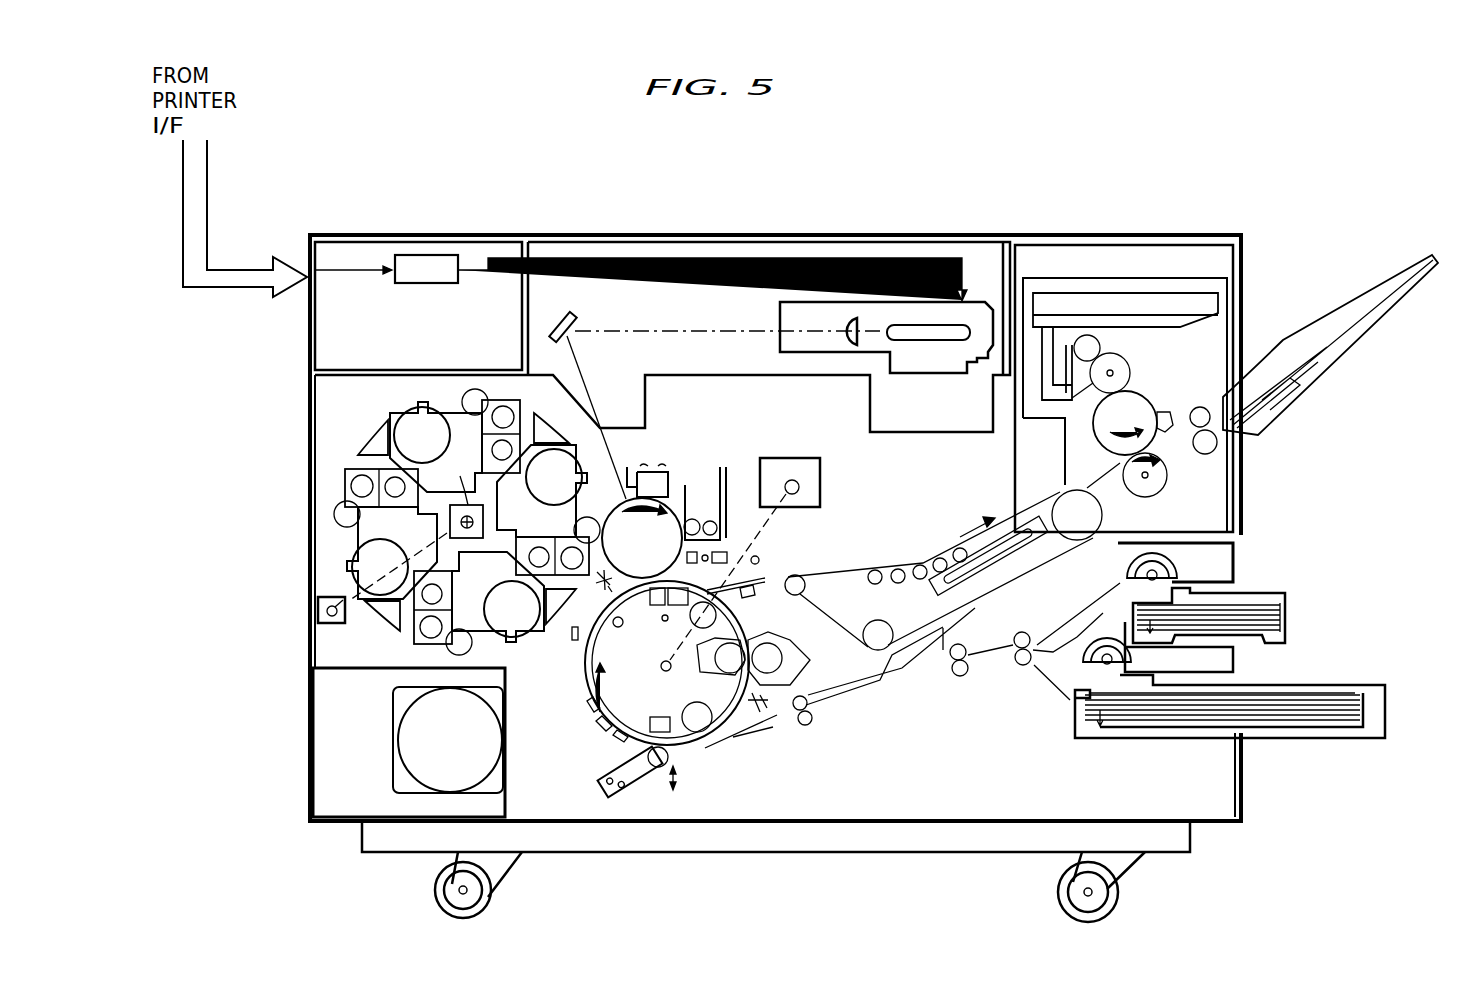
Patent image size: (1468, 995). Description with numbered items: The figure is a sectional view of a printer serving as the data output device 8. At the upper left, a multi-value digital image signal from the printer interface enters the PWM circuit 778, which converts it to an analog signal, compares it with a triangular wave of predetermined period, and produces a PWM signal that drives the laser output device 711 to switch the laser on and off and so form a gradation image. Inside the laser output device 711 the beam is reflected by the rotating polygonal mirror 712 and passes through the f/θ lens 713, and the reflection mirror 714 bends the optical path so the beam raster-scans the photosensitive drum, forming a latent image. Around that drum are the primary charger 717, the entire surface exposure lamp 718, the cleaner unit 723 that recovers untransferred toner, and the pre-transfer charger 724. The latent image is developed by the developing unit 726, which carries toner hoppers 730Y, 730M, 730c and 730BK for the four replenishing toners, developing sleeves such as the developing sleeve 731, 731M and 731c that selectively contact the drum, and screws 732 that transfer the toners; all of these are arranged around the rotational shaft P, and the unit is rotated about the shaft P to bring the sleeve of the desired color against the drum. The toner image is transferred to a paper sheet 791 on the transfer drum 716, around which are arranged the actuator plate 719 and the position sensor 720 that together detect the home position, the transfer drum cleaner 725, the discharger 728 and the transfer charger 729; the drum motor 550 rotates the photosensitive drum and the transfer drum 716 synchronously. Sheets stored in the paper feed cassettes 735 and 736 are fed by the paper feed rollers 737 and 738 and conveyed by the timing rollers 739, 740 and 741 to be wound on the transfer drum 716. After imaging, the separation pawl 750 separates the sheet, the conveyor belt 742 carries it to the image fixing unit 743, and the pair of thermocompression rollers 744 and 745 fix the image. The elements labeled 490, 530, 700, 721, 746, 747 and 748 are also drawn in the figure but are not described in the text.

The data output device 8 is at (1283, 286).
The paper guide 490 is at (740, 740).
The sensor 530 is at (322, 623).
The drum motor 550 is at (797, 458).
The printer control 700 is at (325, 346).
The laser output device 711 is at (877, 302).
The polygonal mirror 712 is at (930, 342).
The f/θ lens 713 is at (845, 323).
The reflection mirror 714 is at (573, 318).
The transfer drum 716 is at (667, 663).
The primary charger 717 is at (672, 480).
The entire surface exposure lamp 718 is at (633, 470).
The actuator plate 719 is at (584, 707).
The position sensor 720 is at (610, 732).
The cleaning blade 721 is at (643, 775).
The cleaner unit 723 is at (694, 522).
The pre-transfer charger 724 is at (597, 586).
The transfer drum cleaner 725 is at (733, 655).
The developing unit 726 is at (362, 442).
The discharger 728 is at (655, 717).
The transfer charger 729 is at (657, 608).
The toner hopper 730BK is at (405, 418).
The toner hopper 730Y is at (580, 430).
The toner hopper 730M is at (600, 655).
The toner hopper 730c is at (345, 563).
The developing sleeve 731 is at (642, 538).
The developing sleeve 731c is at (346, 497).
The developing sleeve 731M is at (398, 662).
The screws 732 is at (505, 415).
The paper feed cassette 735 is at (1287, 620).
The paper feed cassette 736 is at (1367, 678).
The paper feed roller 737 is at (1175, 582).
The paper feed roller 738 is at (1078, 673).
The timing roller 739 is at (1020, 666).
The timing roller 740 is at (962, 677).
The timing roller 741 is at (812, 720).
The conveyor belt 742 is at (858, 568).
The image fixing unit 743 is at (1178, 378).
The thermocompression roller 744 is at (1162, 490).
The thermocompression roller 745 is at (1100, 432).
The roller 746 is at (1122, 365).
The roller 747 is at (1085, 338).
The heater 748 is at (1130, 310).
The separation pawl 750 is at (775, 580).
The PWM circuit 778 is at (436, 255).
The paper sheet 791 is at (1297, 697).
The rotational shaft P is at (416, 527).